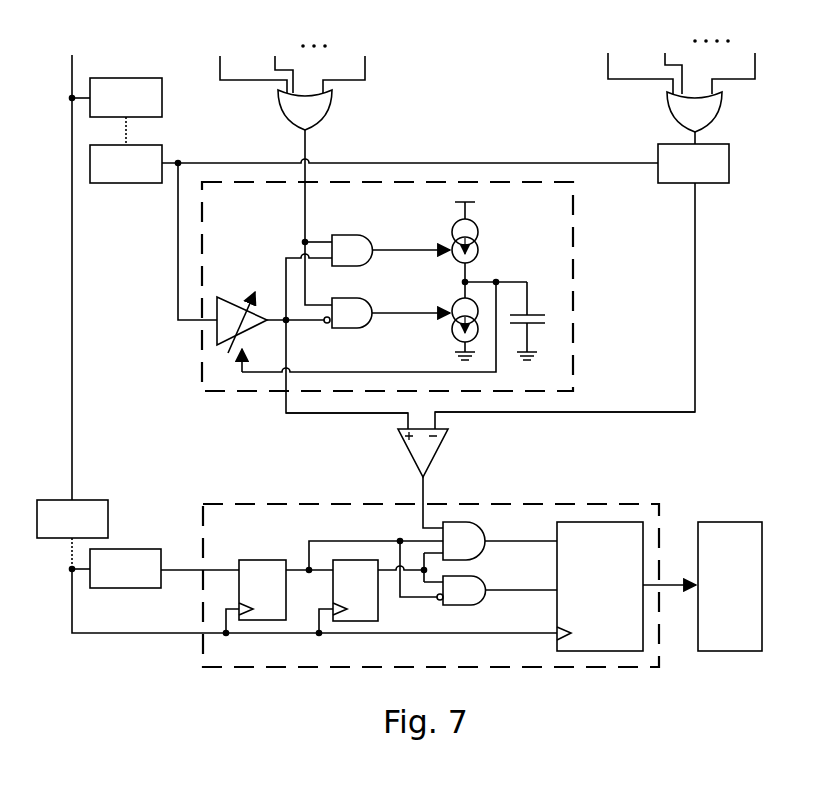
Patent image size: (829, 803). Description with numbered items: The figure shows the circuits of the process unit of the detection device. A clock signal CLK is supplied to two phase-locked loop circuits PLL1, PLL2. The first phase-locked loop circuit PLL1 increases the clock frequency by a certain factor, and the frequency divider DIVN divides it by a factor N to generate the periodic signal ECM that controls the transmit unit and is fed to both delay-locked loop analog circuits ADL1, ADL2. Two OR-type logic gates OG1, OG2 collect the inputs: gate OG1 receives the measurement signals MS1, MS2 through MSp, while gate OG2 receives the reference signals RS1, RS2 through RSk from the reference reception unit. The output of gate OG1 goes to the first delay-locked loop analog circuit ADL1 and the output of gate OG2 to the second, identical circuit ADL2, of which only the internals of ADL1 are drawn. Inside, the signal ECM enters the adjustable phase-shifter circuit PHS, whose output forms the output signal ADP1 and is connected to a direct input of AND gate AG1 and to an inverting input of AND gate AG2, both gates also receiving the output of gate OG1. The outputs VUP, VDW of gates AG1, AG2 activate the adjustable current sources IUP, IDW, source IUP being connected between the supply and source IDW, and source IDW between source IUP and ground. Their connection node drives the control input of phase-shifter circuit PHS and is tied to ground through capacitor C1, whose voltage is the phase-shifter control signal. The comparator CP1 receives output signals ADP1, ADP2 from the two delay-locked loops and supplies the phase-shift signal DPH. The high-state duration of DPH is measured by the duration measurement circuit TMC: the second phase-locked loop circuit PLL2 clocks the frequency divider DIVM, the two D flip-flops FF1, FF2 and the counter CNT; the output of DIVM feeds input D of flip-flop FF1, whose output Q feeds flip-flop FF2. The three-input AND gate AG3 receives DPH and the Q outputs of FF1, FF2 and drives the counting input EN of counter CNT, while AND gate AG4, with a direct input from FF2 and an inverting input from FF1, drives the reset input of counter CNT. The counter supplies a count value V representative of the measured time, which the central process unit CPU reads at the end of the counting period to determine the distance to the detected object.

The clock signal CLK is at (305, 334).
The phase-locked loop circuit PLL1 is at (117, 111).
The frequency divider DIVN is at (126, 164).
The periodic signal ECM is at (410, 229).
The measurement signal MS1 is at (242, 63).
The measurement signal MS2 is at (273, 63).
The measurement signal MSp is at (356, 63).
The OR-type logic gate OG1 is at (278, 110).
The reference measurement signal RS1 is at (630, 62).
The reference measurement signal RS2 is at (665, 62).
The reference measurement signal RSk is at (744, 62).
The OR-type logic gate OG2 is at (666, 117).
The delay-locked loop analog circuit ADL2 is at (582, 286).
The delay-locked loop analog circuit ADL1 is at (387, 286).
The adjustable phase-shifter circuit PHS is at (225, 293).
The AND-type logic gate AG1 is at (362, 233).
The AND-type logic gate AG2 is at (366, 296).
The up control signal VUP is at (411, 237).
The down control signal VDW is at (411, 302).
The adjustable current source IUP is at (483, 230).
The adjustable current source IDW is at (452, 330).
The capacitor C1 is at (537, 313).
The output signal ADP1 is at (346, 428).
The output signal ADP2 is at (565, 427).
The comparator CP1 is at (438, 452).
The phase-shift signal DPH is at (406, 502).
The duration measurement circuit TMC is at (431, 585).
The phase-locked loop circuit PLL2 is at (72, 519).
The frequency divider DIVM is at (155, 568).
The D flip-flop FF1 is at (341, 580).
The D flip-flop FF2 is at (388, 587).
The AND-type logic gate AG3 is at (487, 533).
The AND-type logic gate AG4 is at (487, 580).
The counter CNT is at (600, 586).
The count value V is at (669, 571).
The central process unit CPU is at (730, 586).